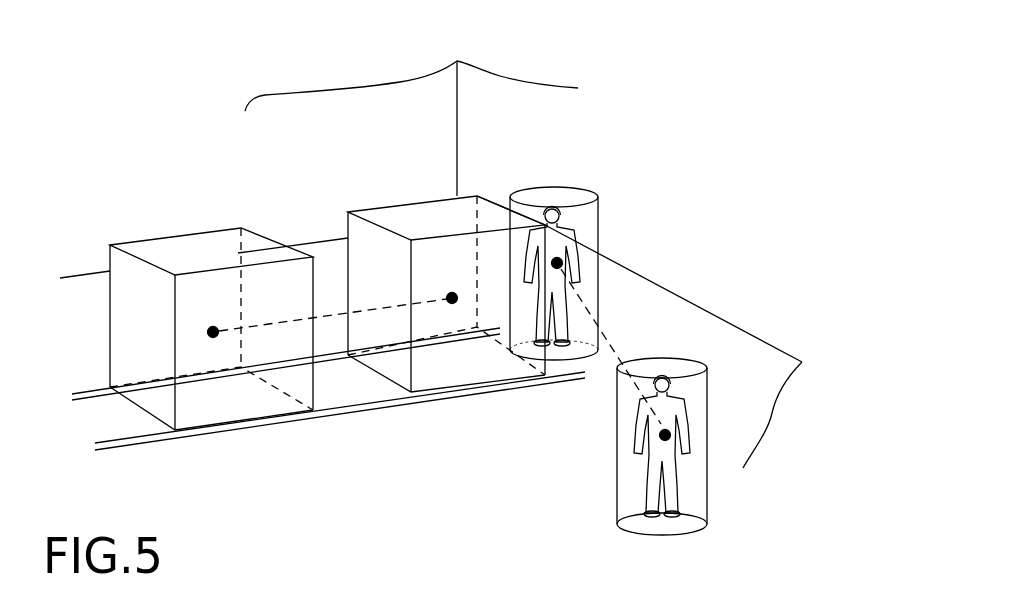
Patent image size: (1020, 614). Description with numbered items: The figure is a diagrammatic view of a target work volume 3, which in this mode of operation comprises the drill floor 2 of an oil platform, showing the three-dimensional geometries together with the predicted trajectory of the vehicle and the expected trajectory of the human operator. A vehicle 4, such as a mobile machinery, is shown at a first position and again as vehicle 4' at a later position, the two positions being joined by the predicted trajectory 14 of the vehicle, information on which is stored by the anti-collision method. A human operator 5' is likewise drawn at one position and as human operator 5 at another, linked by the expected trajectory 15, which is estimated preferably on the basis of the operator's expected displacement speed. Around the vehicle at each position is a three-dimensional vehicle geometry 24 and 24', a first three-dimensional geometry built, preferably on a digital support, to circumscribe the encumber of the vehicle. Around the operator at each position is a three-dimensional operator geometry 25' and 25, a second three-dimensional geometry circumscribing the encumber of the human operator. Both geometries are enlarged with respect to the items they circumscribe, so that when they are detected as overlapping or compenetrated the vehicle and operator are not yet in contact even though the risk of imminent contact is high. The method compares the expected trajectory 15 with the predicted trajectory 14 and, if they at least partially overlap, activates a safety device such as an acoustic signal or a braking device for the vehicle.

The drill floor 2 is at (670, 332).
The target work volume 3 is at (623, 231).
The vehicle 4 is at (137, 339).
The vehicle 4' is at (423, 211).
The human operator 5 is at (720, 447).
The human operator 5' is at (547, 230).
The predicted trajectory 14 is at (336, 308).
The expected trajectory 15 is at (606, 338).
The three-dimensional vehicle geometry 24 is at (211, 295).
The three-dimensional vehicle geometry 24' is at (433, 248).
The three-dimensional operator geometry 25 is at (733, 446).
The three-dimensional operator geometry 25' is at (571, 229).